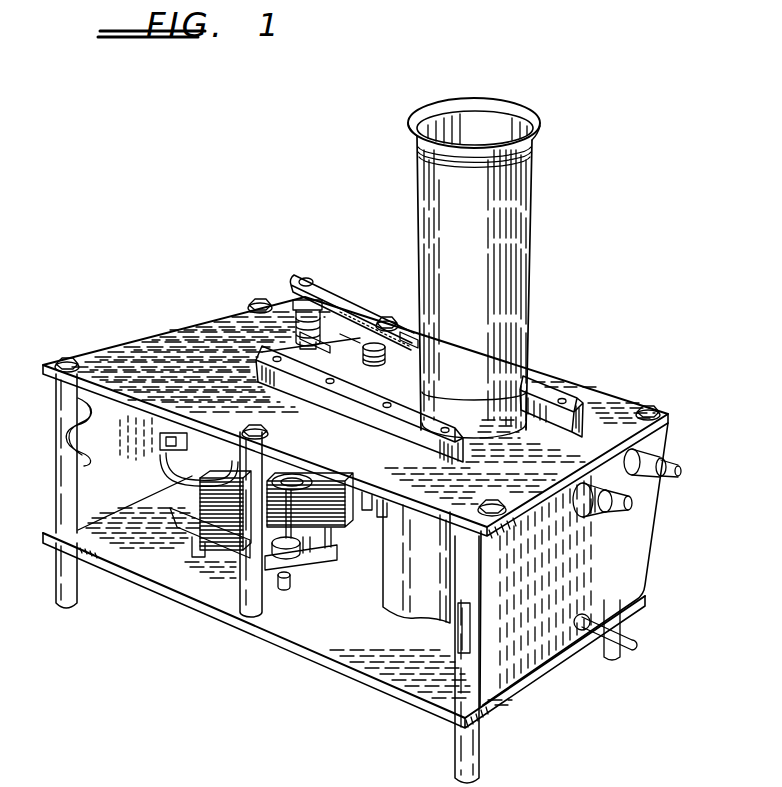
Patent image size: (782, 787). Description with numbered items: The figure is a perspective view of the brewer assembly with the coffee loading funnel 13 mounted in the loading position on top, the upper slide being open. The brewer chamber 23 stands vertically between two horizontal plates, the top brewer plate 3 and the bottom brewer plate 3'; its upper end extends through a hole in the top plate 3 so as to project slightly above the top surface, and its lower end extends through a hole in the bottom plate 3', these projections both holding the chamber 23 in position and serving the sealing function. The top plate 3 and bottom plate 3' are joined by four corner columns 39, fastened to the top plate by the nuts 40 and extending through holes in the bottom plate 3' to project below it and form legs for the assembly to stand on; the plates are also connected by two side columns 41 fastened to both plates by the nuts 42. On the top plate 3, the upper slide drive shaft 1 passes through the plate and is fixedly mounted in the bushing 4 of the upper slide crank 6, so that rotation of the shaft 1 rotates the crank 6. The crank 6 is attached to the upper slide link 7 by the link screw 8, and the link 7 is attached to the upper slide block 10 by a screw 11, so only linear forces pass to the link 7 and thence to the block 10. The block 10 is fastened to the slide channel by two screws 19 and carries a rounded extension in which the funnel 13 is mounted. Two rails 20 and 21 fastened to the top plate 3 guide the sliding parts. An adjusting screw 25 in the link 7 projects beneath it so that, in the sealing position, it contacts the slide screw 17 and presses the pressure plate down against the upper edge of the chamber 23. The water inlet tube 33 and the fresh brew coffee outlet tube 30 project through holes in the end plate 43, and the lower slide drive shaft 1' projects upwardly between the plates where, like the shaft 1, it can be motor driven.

The upper slide drive shaft 1 is at (293, 331).
The lower slide drive shaft 1' is at (301, 513).
The brewer top plate 3 is at (355, 417).
The bottom brewer plate 3' is at (344, 602).
The bushing 4 is at (294, 302).
The upper slide crank 6 is at (301, 323).
The upper slide link 7 is at (358, 304).
The link screw 8 is at (312, 283).
The upper slide block 10 is at (503, 438).
The screw 11 is at (412, 328).
The coffee loading funnel 13 is at (528, 281).
The slide screw 17 is at (352, 339).
The screws 19 is at (375, 372).
The rail 20 is at (357, 413).
The rail 21 is at (549, 397).
The brewer chamber 23 is at (425, 608).
The adjusting screw 25 is at (384, 317).
The fresh brew coffee outlet tube 30 is at (600, 644).
The water inlet tube 33 is at (622, 515).
The corner columns 39 is at (55, 467).
The nuts 40 is at (66, 358).
The side columns 41 is at (264, 597).
The nuts 42 is at (252, 427).
The end plate 43 is at (640, 563).